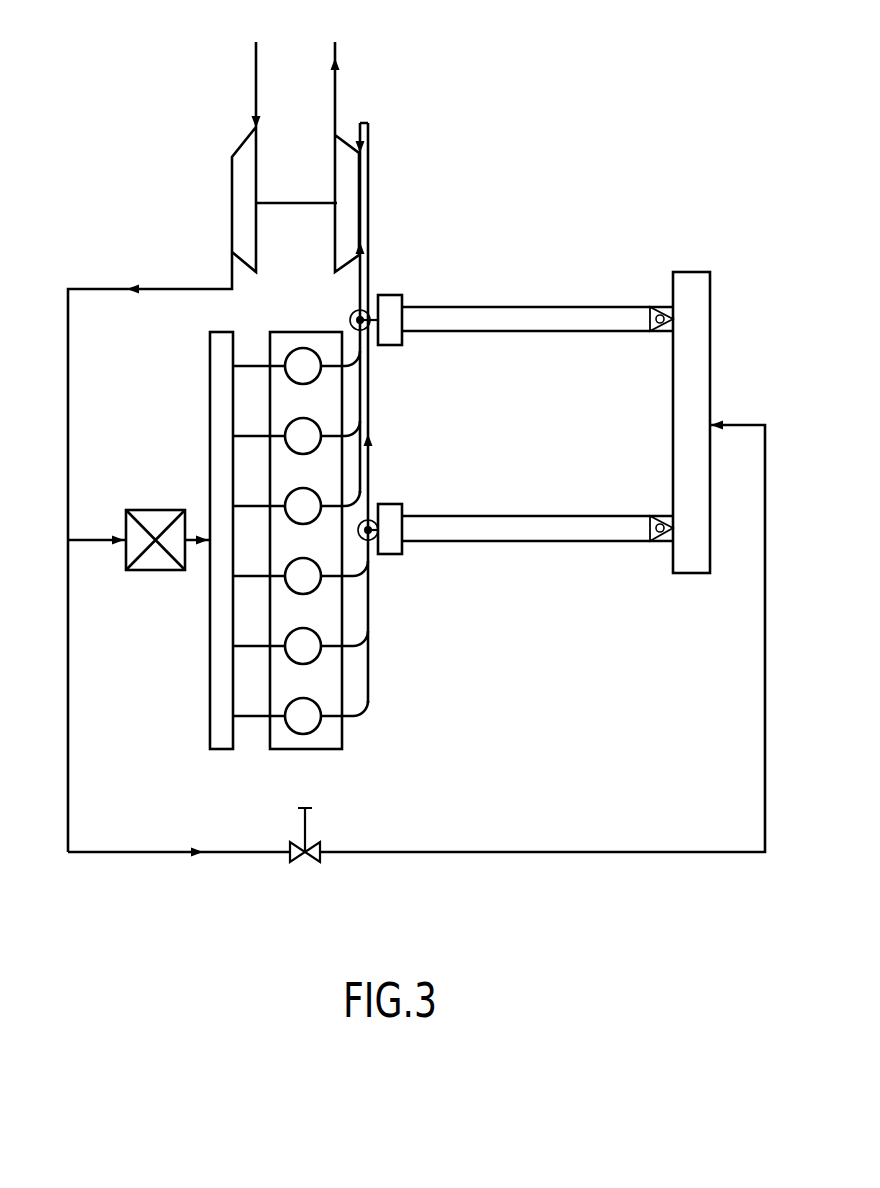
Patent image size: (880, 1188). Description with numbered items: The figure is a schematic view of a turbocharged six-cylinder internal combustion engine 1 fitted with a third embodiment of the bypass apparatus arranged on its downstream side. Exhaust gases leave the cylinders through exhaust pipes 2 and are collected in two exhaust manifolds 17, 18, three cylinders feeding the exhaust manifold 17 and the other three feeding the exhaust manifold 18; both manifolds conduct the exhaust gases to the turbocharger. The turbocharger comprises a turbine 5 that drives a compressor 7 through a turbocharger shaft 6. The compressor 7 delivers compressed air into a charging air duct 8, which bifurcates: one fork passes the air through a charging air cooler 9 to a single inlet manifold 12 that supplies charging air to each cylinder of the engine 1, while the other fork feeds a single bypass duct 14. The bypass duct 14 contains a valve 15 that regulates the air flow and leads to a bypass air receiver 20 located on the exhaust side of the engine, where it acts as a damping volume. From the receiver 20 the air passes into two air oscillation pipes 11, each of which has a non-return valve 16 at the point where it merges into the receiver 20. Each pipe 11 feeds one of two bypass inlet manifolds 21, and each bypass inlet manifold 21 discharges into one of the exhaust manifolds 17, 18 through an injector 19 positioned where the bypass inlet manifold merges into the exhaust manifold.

The six-cylinder internal combustion engine 1 is at (320, 411).
The exhaust pipes 2 is at (328, 715).
The turbine 5 is at (342, 207).
The turbocharger shaft 6 is at (304, 203).
The compressor 7 is at (235, 207).
The charging air duct 8 is at (82, 288).
The charging air cooler 9 is at (148, 510).
The air oscillation pipes 11 is at (484, 331).
The single inlet manifold 12 is at (211, 517).
The single bypass duct 14 is at (140, 855).
The valve 15 is at (320, 856).
The non-return valve 16 is at (648, 308).
The exhaust manifold 17 is at (367, 605).
The exhaust manifold 18 is at (360, 290).
The injector 19 is at (362, 315).
The bypass air receiver 20 is at (680, 423).
The bypass inlet manifolds 21 is at (381, 331).